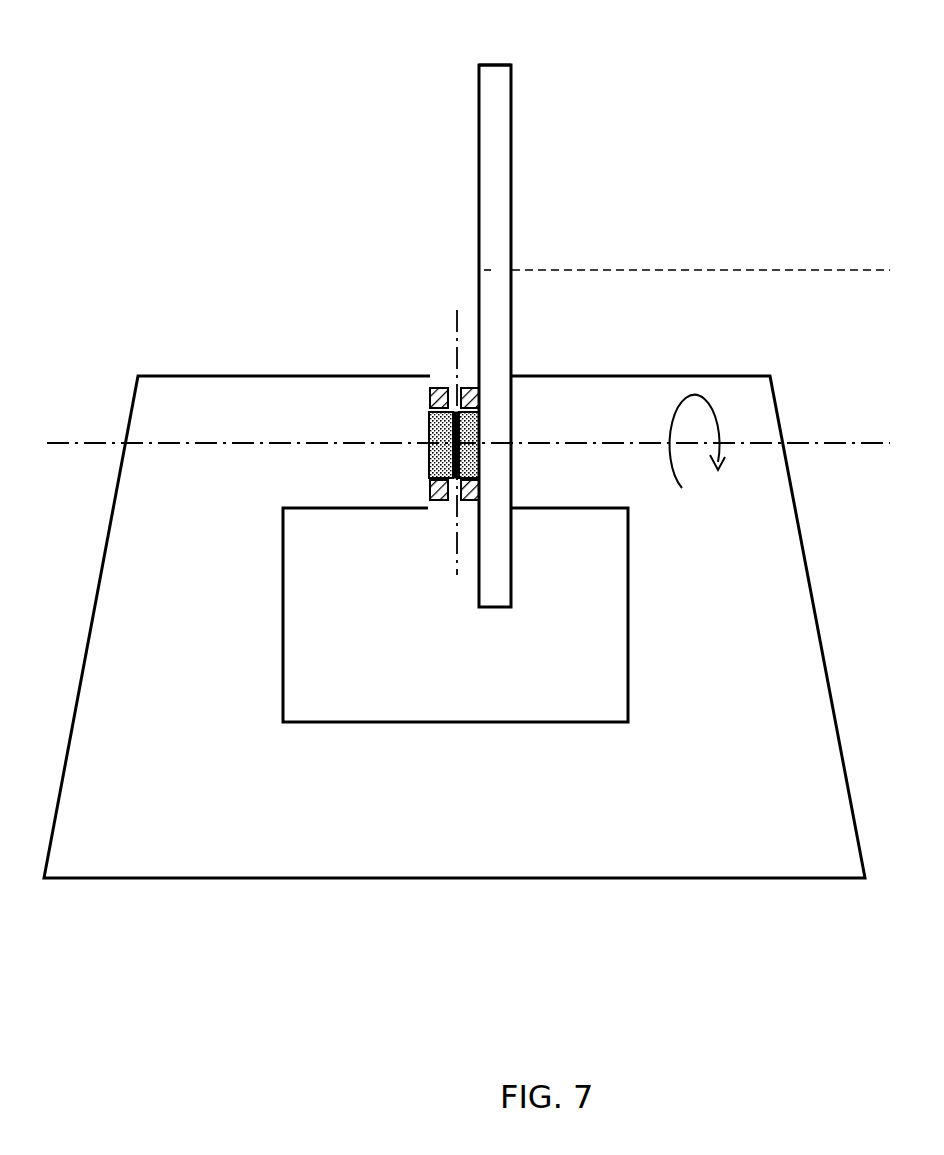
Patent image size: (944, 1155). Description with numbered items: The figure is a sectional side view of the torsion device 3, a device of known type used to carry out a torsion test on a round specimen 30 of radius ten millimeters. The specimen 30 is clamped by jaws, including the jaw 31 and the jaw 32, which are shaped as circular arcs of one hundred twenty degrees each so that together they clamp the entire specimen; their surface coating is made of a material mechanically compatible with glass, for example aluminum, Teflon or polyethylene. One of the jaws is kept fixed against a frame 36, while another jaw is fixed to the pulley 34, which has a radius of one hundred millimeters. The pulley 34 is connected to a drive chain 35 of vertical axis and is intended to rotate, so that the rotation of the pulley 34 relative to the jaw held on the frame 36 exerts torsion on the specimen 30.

The torsion device 3 is at (388, 218).
The round specimen 30 is at (437, 500).
The jaw 31 is at (430, 384).
The jaw 32 is at (478, 500).
The pulley 34 is at (495, 337).
The drive chain 35 is at (470, 98).
The frame 36 is at (195, 666).